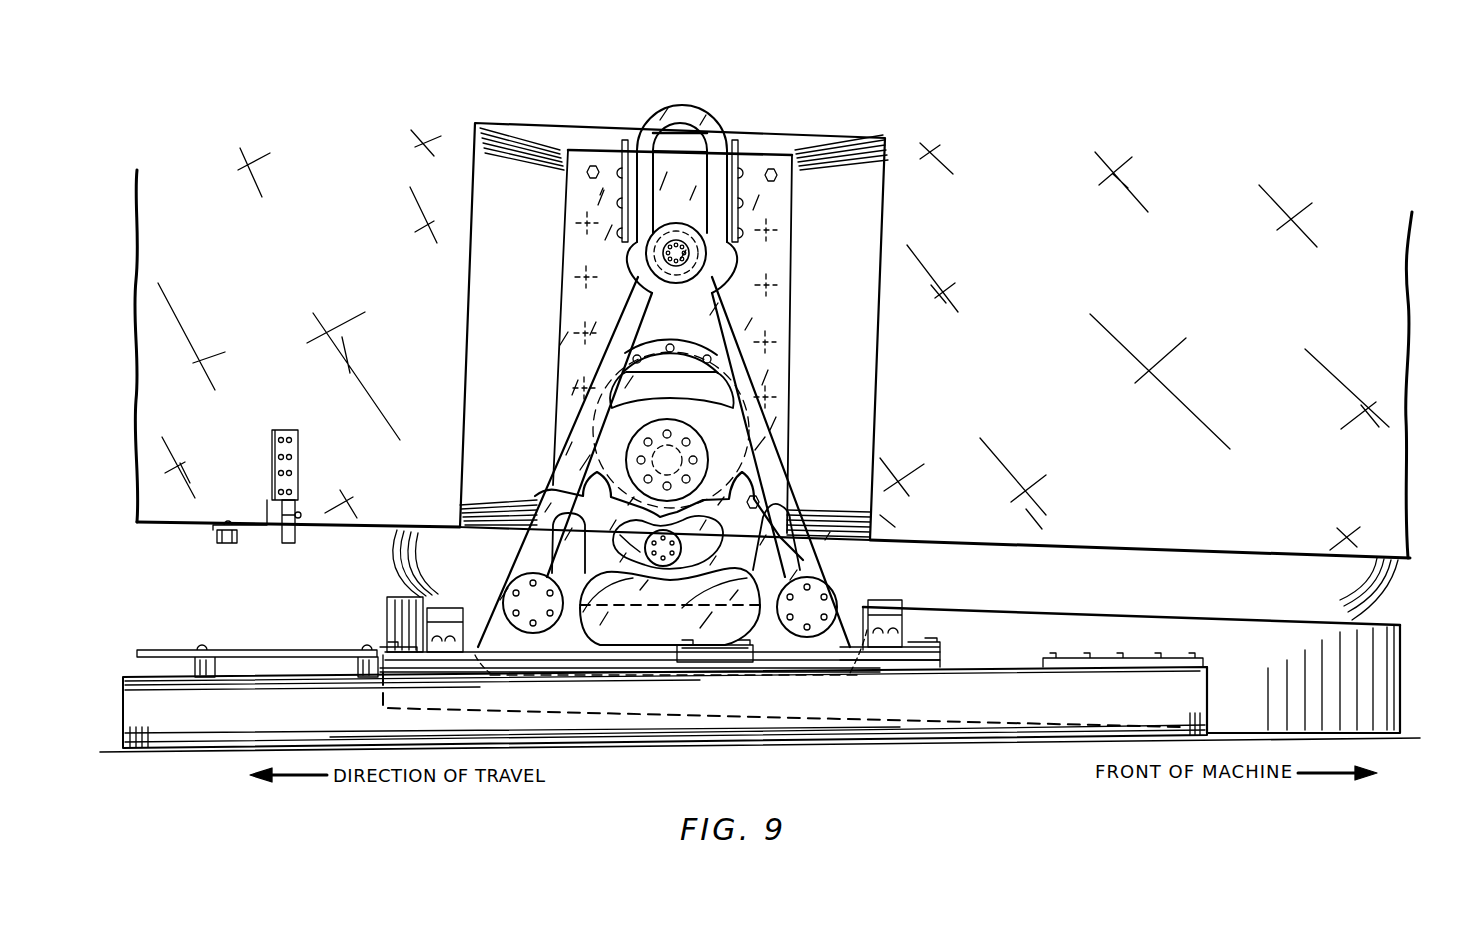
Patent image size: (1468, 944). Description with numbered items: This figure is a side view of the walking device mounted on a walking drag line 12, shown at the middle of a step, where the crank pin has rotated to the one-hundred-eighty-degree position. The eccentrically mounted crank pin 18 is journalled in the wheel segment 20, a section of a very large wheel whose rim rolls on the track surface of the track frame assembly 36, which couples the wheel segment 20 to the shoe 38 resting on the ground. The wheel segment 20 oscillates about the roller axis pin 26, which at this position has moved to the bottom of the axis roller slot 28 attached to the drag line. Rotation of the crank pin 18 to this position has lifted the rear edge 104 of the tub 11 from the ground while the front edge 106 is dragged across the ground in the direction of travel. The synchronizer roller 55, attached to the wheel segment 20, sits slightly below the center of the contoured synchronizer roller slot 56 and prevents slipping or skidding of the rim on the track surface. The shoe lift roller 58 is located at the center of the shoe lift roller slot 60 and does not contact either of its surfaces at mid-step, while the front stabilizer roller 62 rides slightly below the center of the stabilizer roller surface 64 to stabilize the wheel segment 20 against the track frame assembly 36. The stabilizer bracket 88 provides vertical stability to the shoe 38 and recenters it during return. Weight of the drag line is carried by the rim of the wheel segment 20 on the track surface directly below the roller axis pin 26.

The tub 11 is at (1240, 653).
The walking drag line 12 is at (1068, 357).
The crank pin 18 is at (662, 448).
The wheel segment 20 is at (755, 435).
The roller axis pin 26 is at (680, 252).
The axis roller slot 28 is at (683, 91).
The track frame assembly 36 is at (683, 607).
The shoe 38 is at (320, 716).
The synchronizer roller 55 is at (506, 586).
The synchronizer roller slot 56 is at (520, 548).
The shoe lift roller 58 is at (666, 548).
The shoe lift roller slot 60 is at (618, 540).
The stabilizer roller 62 is at (817, 597).
The stabilizer roller surface 64 is at (807, 557).
The stabilizer bracket 88 is at (295, 533).
The rear edge 104 is at (385, 612).
The front edge 106 is at (1402, 653).